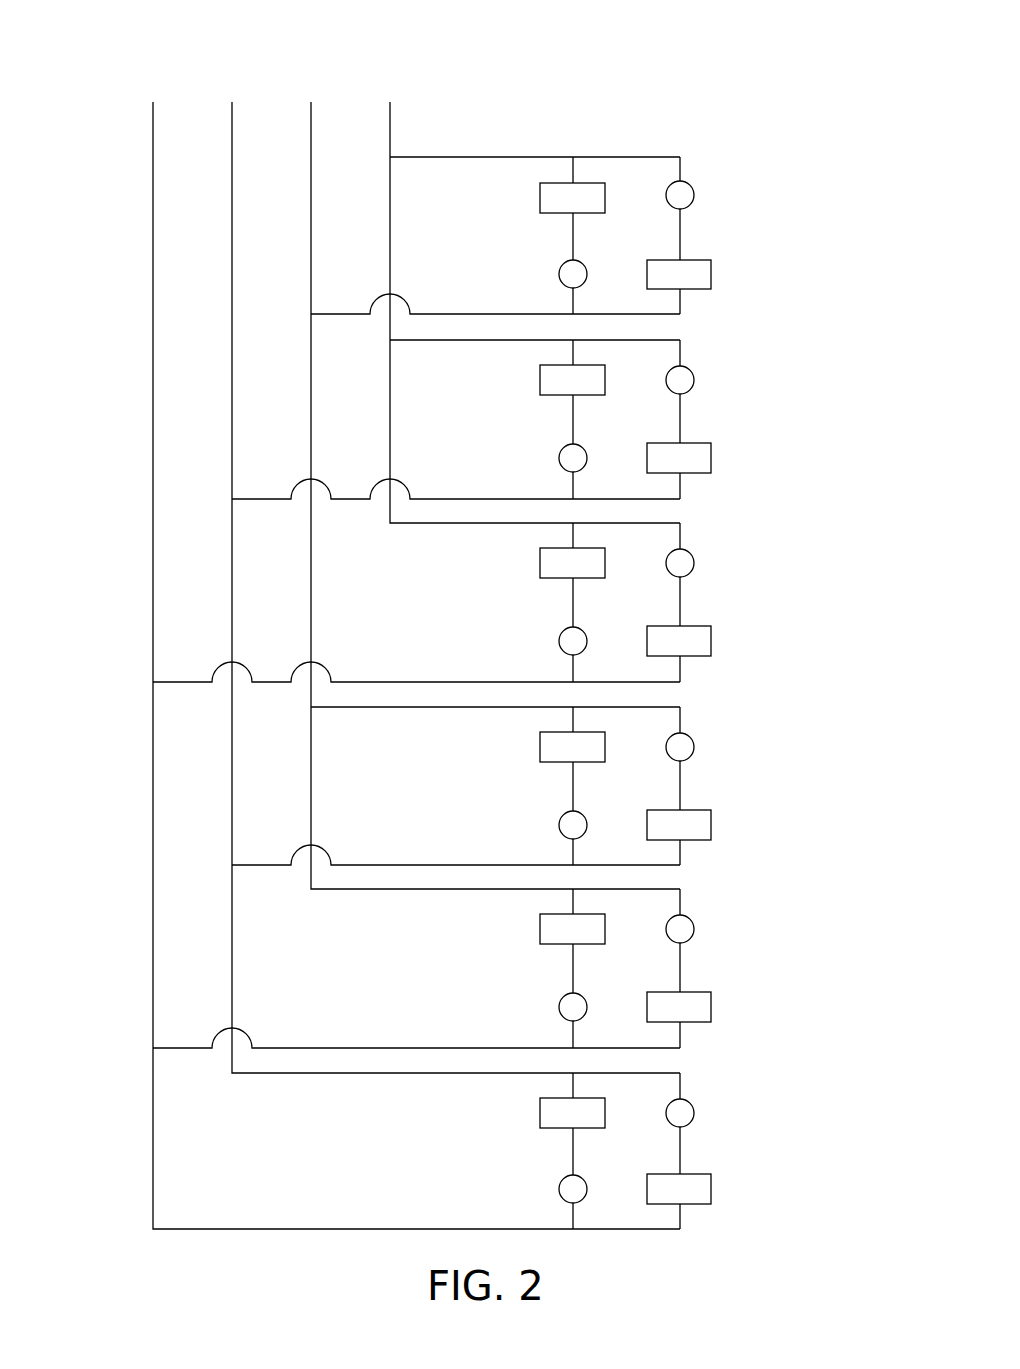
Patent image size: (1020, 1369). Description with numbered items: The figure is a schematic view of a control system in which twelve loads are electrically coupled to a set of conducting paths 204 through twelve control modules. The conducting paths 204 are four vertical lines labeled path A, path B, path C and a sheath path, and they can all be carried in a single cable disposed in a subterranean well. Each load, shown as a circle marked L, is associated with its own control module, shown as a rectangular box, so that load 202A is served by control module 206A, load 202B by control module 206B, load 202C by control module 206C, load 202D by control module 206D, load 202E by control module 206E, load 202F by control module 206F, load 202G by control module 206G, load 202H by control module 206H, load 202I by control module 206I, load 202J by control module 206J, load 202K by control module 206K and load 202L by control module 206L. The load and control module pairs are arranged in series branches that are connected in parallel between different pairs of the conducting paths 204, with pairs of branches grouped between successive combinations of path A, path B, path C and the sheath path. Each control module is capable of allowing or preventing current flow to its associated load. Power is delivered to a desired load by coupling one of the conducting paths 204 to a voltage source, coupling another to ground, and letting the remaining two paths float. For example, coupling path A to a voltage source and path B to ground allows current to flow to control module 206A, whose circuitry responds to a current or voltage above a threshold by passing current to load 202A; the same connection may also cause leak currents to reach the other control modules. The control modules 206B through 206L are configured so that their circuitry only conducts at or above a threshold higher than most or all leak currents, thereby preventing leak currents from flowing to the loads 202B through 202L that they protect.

The conducting paths 204 is at (113, 67).
The load 202A is at (694, 1111).
The load 202B is at (559, 1191).
The load 202C is at (694, 927).
The load 202D is at (559, 1009).
The load 202E is at (694, 745).
The load 202F is at (559, 827).
The load 202G is at (694, 561).
The load 202H is at (559, 643).
The load 202I is at (694, 378).
The load 202J is at (559, 460).
The load 202K is at (694, 193).
The load 202L is at (559, 276).
The control module 206A is at (711, 1188).
The control module 206B is at (540, 1114).
The control module 206C is at (711, 1006).
The control module 206D is at (540, 930).
The control module 206E is at (711, 824).
The control module 206F is at (540, 748).
The control module 206G is at (711, 640).
The control module 206H is at (540, 564).
The control module 206I is at (711, 457).
The control module 206J is at (540, 381).
The control module 206K is at (711, 274).
The control module 206L is at (540, 198).